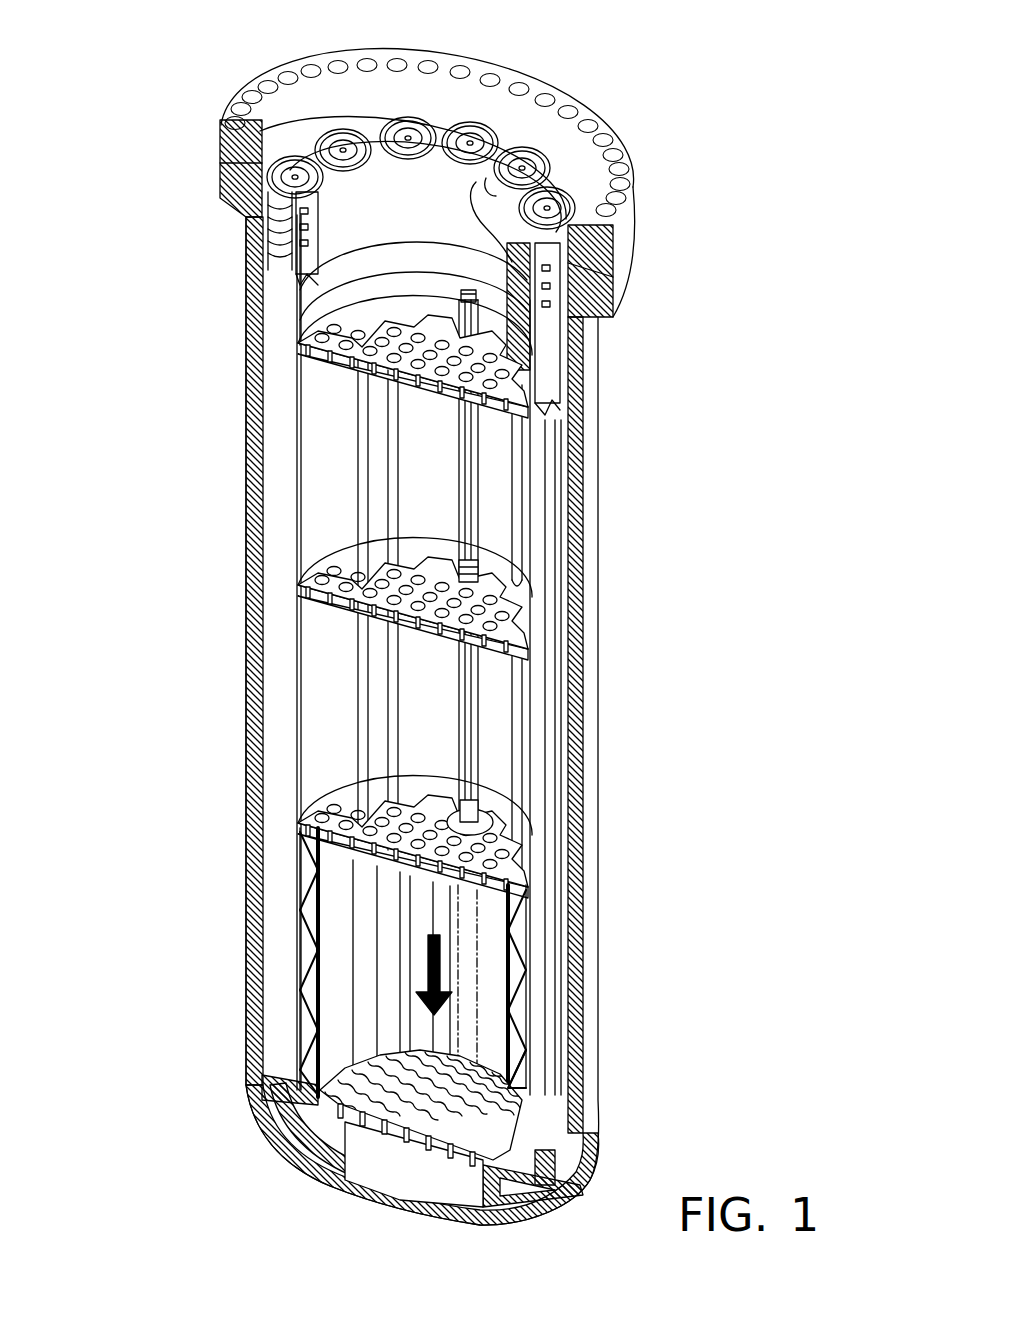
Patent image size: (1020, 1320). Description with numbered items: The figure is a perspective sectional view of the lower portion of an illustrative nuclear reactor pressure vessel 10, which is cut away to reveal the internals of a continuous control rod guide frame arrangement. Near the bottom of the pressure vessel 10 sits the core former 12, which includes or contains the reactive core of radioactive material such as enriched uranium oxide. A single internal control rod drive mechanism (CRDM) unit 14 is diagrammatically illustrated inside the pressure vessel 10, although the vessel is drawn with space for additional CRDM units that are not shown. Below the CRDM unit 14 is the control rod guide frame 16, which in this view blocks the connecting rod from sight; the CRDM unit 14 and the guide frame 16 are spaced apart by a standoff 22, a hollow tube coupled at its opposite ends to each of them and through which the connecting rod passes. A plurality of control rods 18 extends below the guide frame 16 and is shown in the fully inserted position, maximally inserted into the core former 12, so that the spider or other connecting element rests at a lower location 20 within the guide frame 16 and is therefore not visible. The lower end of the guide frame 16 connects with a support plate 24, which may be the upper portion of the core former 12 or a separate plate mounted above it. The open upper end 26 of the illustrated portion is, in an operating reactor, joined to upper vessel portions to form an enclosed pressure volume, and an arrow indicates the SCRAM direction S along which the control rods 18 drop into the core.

The nuclear reactor pressure vessel 10 is at (243, 424).
The core former 12 is at (297, 809).
The control rod drive mechanism (CRDM) unit 14 is at (490, 473).
The control rod guide frame 16 is at (492, 737).
The control rods 18 is at (532, 956).
The lower location 20 is at (495, 822).
The standoff 22 is at (480, 578).
The support plate 24 is at (364, 808).
The open upper end 26 is at (410, 205).
The SCRAM direction S is at (495, 957).